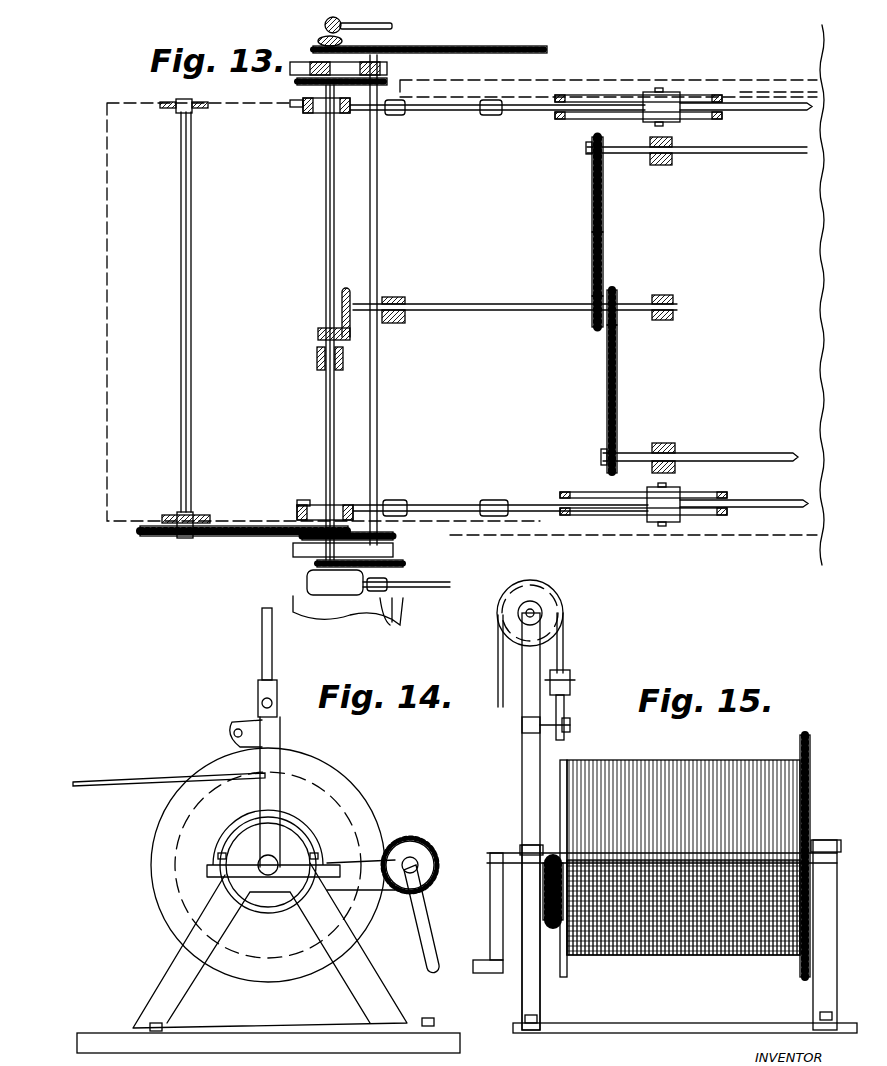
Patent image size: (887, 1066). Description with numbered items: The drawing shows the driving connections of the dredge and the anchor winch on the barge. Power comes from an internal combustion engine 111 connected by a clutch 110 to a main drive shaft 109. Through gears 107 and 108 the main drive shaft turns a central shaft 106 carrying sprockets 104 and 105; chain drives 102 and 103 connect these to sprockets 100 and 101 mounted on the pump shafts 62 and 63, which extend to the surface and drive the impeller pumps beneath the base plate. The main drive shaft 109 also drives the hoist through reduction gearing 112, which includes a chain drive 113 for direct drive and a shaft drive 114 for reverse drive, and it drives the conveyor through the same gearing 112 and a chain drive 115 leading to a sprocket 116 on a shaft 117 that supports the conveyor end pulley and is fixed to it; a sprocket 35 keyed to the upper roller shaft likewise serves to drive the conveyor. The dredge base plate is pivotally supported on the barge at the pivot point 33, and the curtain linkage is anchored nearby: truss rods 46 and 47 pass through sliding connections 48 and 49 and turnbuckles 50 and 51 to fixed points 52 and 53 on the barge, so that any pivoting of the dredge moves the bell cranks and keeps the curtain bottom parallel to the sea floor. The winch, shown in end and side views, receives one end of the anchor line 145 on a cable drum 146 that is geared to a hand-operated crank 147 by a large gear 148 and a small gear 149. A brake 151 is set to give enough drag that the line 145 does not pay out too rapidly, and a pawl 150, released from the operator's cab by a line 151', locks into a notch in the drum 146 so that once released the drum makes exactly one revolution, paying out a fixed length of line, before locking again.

In FIG. 13, the pivot point 33 is at (350, 585).
In FIG. 13, the sprocket 35 is at (175, 545).
In FIG. 13, the truss rod 46 is at (780, 505).
In FIG. 13, the truss rod 47 is at (755, 100).
In FIG. 13, the sliding connection 48 is at (674, 529).
In FIG. 13, the sliding connection 49 is at (673, 86).
In FIG. 13, the turnbuckle 50 is at (433, 505).
In FIG. 13, the turnbuckle 51 is at (442, 112).
In FIG. 13, the fixed point 52 is at (300, 502).
In FIG. 13, the fixed point 53 is at (296, 106).
In FIG. 13, the pump shaft 62 is at (735, 455).
In FIG. 13, the pump shaft 63 is at (715, 154).
In FIG. 13, the sprocket 100 is at (607, 455).
In FIG. 13, the sprocket 101 is at (592, 140).
In FIG. 13, the chain drive 102 is at (607, 393).
In FIG. 13, the chain drive 103 is at (592, 200).
In FIG. 13, the sprocket 104 is at (617, 303).
In FIG. 13, the sprocket 105 is at (592, 300).
In FIG. 13, the central shaft 106 is at (528, 304).
In FIG. 13, the gear 107 is at (342, 303).
In FIG. 13, the gear 108 is at (320, 335).
In FIG. 13, the main drive shaft 109 is at (326, 425).
In FIG. 13, the clutch 110 is at (305, 585).
In FIG. 13, the internal combustion engine 111 is at (315, 607).
In FIG. 13, the gearing 112 is at (312, 80).
In FIG. 13, the chain drive 113 is at (480, 47).
In FIG. 13, the shaft drive 114 is at (392, 30).
In FIG. 13, the chain drive 115 is at (242, 537).
In FIG. 13, the sprocket 116 is at (163, 538).
In FIG. 13, the shaft 117 is at (172, 445).
In FIG. 14, the line 145 is at (140, 780).
In FIG. 14, the cable drum 146 is at (335, 805).
In FIG. 15, the cable drum 146 is at (715, 760).
In FIG. 14, the hand-operated crank 147 is at (430, 905).
In FIG. 15, the hand-operated crank 147 is at (490, 885).
In FIG. 15, the large gear 148 is at (812, 803).
In FIG. 14, the small gear 149 is at (410, 840).
In FIG. 15, the small gear 149 is at (812, 850).
In FIG. 14, the pawl 150 is at (258, 710).
In FIG. 14, the brake 151 is at (301, 792).
In FIG. 15, the brake 151 is at (524, 821).
In FIG. 14, the line 151' is at (244, 662).
In FIG. 15, the line 151' is at (582, 692).